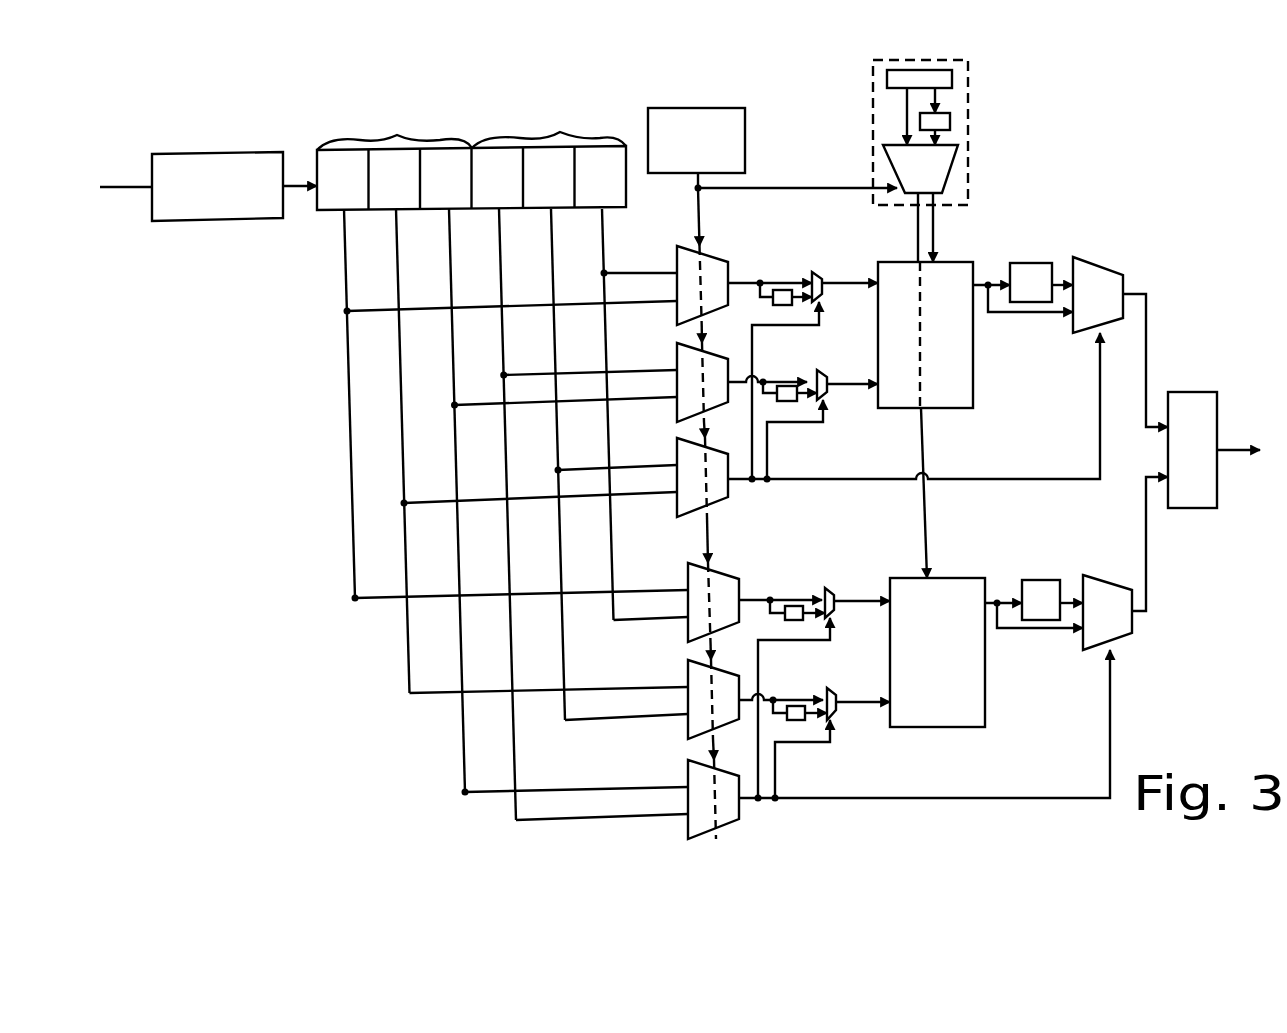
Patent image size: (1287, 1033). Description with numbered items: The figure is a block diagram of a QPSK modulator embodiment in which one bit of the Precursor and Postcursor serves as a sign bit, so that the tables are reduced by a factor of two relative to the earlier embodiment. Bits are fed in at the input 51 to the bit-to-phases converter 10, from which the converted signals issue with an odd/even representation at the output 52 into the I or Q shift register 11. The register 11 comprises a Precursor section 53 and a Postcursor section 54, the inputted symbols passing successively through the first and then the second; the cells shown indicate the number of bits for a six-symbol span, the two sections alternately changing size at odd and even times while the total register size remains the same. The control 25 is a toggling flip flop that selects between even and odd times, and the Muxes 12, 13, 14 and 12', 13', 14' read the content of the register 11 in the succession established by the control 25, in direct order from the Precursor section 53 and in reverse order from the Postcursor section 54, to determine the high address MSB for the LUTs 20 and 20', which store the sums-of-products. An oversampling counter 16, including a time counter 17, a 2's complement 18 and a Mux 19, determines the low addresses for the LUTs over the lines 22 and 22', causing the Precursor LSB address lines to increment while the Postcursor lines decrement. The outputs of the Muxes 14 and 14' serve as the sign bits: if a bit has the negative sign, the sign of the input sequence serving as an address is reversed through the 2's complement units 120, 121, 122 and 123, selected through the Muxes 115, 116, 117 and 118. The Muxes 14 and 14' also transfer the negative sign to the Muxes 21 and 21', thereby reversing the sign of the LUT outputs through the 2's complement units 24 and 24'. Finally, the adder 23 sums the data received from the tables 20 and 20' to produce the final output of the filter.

The bit input 51 is at (105, 185).
The bit-to-phases converter 10 is at (197, 168).
The converted signal output 52 is at (293, 182).
The I or Q shift register 11 is at (595, 122).
The Precursor section 53 is at (397, 135).
The Postcursor section 54 is at (555, 132).
The control 25 is at (708, 125).
The oversampling counter 16 is at (964, 110).
The time counter 17 is at (920, 80).
The 2's complement 18 is at (945, 120).
The Mux 19 is at (933, 165).
The control lines 22 is at (1000, 216).
The control line 22' is at (1070, 493).
The LUT 20 is at (963, 339).
The LUT 20' is at (980, 708).
The 2's complement unit 24 is at (1045, 257).
The 2's complement unit 24' is at (1049, 574).
The Mux 21 is at (1120, 328).
The Mux 21' is at (1125, 563).
The adder 23 is at (1185, 403).
The Mux 12 is at (509, 300).
The Mux 13 is at (510, 400).
The Mux 14 is at (511, 494).
The Mux 12' is at (517, 617).
The Mux 13' is at (518, 714).
The Mux 14' is at (519, 798).
The Mux 115 is at (820, 275).
The Mux 116 is at (820, 372).
The Mux 117 is at (832, 597).
The Mux 118 is at (832, 697).
The 2's complement unit 120 is at (783, 290).
The 2's complement unit 121 is at (786, 402).
The 2's complement unit 122 is at (792, 607).
The 2's complement unit 123 is at (795, 720).